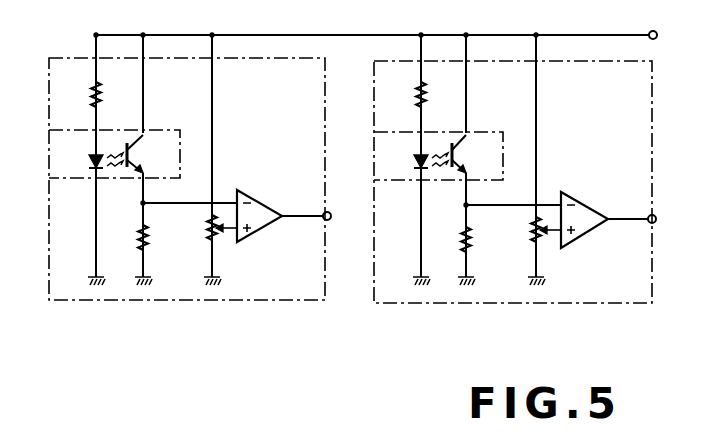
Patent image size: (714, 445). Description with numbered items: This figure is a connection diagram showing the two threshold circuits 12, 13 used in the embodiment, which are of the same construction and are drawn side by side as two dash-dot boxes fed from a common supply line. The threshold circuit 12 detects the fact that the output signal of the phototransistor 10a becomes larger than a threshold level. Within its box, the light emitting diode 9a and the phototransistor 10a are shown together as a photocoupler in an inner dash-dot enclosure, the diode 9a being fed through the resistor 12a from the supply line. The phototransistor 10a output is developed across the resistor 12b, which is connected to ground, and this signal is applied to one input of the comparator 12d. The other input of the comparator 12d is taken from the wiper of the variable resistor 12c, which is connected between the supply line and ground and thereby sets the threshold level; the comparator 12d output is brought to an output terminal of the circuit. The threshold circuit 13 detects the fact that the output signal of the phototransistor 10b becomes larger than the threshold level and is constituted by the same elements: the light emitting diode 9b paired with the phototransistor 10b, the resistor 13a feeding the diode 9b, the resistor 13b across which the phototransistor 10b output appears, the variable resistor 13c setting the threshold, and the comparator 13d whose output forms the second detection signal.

The threshold circuit 12 is at (245, 300).
The resistor 12a is at (104, 101).
The resistor 12b is at (150, 247).
The variable resistor 12c is at (206, 238).
The comparator 12d is at (266, 207).
The light emitting diode 9a is at (88, 162).
The phototransistor 10a is at (132, 152).
The threshold circuit 13 is at (575, 303).
The resistor 13a is at (429, 101).
The resistor 13b is at (473, 248).
The variable resistor 13c is at (530, 240).
The comparator 13d is at (594, 210).
The light emitting diode 9b is at (413, 162).
The phototransistor 10b is at (457, 152).